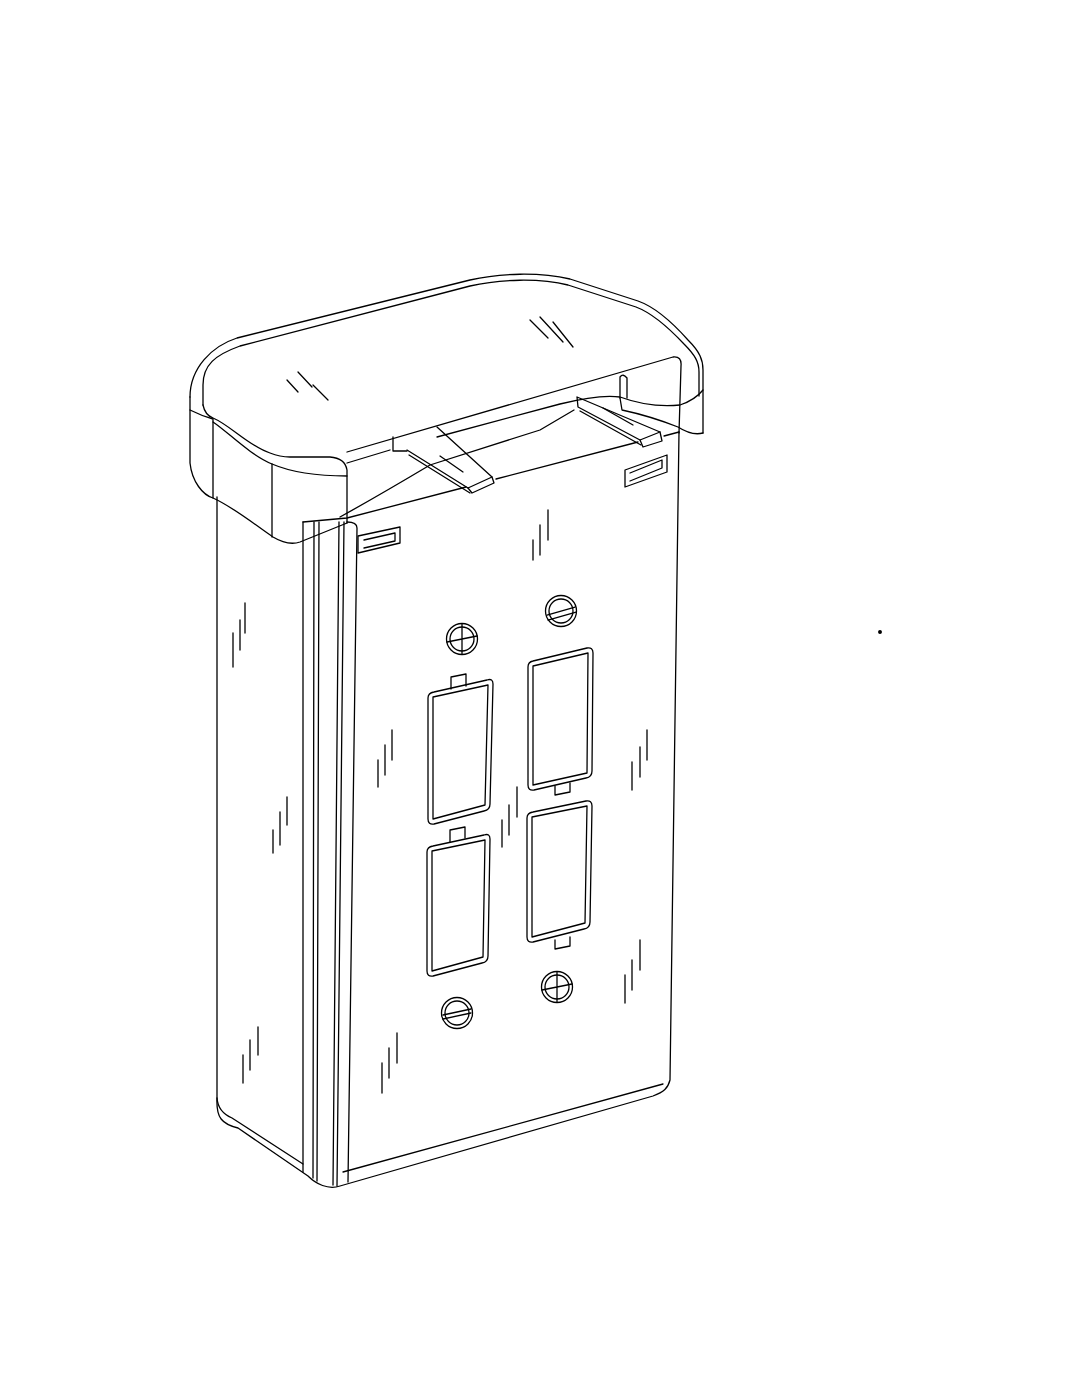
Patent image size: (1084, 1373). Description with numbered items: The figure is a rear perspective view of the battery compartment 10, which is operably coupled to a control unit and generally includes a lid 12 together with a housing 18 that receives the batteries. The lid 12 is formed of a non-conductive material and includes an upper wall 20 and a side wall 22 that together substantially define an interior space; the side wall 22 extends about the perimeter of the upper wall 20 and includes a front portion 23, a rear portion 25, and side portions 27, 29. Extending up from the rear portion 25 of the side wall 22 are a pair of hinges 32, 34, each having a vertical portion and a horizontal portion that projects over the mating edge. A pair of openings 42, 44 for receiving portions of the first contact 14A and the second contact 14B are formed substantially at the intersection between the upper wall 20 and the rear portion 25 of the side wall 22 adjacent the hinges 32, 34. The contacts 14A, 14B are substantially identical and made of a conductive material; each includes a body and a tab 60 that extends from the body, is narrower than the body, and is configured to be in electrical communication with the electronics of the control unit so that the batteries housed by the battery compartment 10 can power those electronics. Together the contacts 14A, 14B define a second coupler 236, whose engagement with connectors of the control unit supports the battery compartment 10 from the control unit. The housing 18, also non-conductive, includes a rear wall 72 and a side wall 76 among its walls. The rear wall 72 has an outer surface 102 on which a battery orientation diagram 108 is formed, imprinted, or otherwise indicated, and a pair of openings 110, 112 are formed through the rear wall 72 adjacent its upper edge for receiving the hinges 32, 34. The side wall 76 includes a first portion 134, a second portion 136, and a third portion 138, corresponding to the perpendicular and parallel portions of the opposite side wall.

The battery compartment 10 is at (798, 104).
The lid 12 is at (618, 252).
The housing 18 is at (699, 1107).
The upper wall 20 is at (400, 335).
The side wall 22 is at (225, 496).
The front portion 23 is at (190, 428).
The rear portion 25 is at (557, 447).
The side portion 27 is at (668, 325).
The side portion 29 is at (230, 473).
The hinge 32 is at (354, 563).
The hinge 34 is at (689, 471).
The opening 42 is at (405, 478).
The opening 44 is at (655, 393).
The tab 60 is at (655, 418).
The rear wall 72 is at (414, 1138).
The side wall 76 is at (234, 804).
The outer surface 102 is at (553, 1075).
The battery orientation diagram 108 is at (592, 695).
The opening 110 is at (389, 554).
The opening 112 is at (650, 477).
The first portion 134 is at (248, 693).
The second portion 136 is at (310, 878).
The third portion 138 is at (322, 1013).
The first contact 14A is at (418, 482).
The second contact 14B is at (684, 442).
The second coupler 236 is at (476, 400).